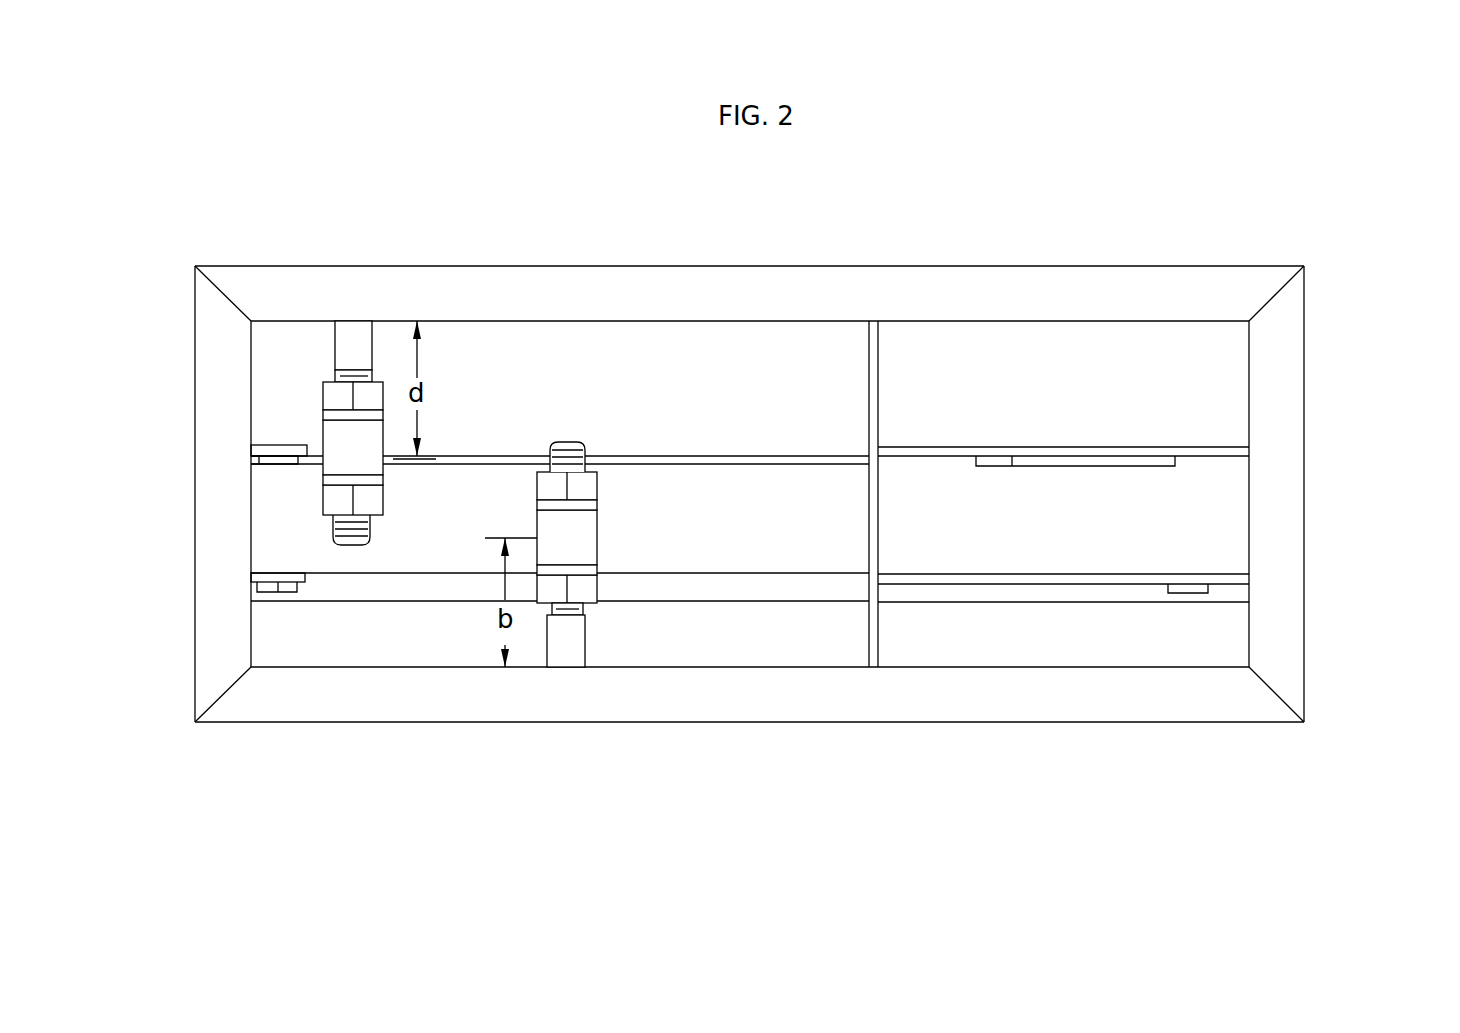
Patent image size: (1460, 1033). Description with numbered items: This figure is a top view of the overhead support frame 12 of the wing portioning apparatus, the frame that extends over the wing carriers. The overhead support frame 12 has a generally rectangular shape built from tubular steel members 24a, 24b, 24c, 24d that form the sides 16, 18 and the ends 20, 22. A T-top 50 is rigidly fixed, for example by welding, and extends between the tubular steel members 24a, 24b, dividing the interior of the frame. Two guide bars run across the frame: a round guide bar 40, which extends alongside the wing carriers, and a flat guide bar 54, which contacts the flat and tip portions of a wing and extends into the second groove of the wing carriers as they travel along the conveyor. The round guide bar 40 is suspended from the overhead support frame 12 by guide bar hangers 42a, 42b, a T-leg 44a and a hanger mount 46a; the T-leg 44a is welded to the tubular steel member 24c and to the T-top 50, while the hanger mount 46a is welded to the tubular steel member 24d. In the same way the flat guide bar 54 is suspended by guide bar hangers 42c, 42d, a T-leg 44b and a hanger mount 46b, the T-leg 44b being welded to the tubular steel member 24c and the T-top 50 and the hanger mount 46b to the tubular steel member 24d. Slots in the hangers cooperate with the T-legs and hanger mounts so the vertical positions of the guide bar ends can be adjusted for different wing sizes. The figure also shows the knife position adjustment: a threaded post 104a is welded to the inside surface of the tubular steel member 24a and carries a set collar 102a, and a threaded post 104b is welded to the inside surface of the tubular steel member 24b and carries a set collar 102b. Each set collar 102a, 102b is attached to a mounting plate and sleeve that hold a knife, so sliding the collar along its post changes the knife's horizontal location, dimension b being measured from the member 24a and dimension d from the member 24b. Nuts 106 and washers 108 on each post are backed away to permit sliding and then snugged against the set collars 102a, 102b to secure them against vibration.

The overhead support frame 12 is at (353, 243).
The side 16 is at (635, 722).
The side 18 is at (722, 265).
The end 20 is at (1315, 497).
The end 22 is at (195, 482).
The tubular steel member 24a is at (825, 700).
The tubular steel member 24b is at (908, 297).
The tubular steel member 24c is at (1275, 393).
The tubular steel member 24d is at (227, 528).
The round guide bar 40 is at (347, 588).
The guide bar hanger 42a is at (1185, 600).
The guide bar hanger 42b is at (278, 588).
The guide bar hanger 42c is at (990, 465).
The guide bar hanger 42d is at (277, 462).
The T-leg 44a is at (1050, 573).
The T-leg 44b is at (1205, 447).
The hanger mount 46a is at (263, 577).
The hanger mount 46b is at (283, 446).
The T-top 50 is at (882, 382).
The flat guide bar 54 is at (480, 452).
The set collar 102a is at (567, 537).
The set collar 102b is at (332, 438).
The threaded post 104a is at (581, 438).
The threaded post 104b is at (348, 355).
The nuts 106 is at (327, 391).
The washers 108 is at (324, 409).